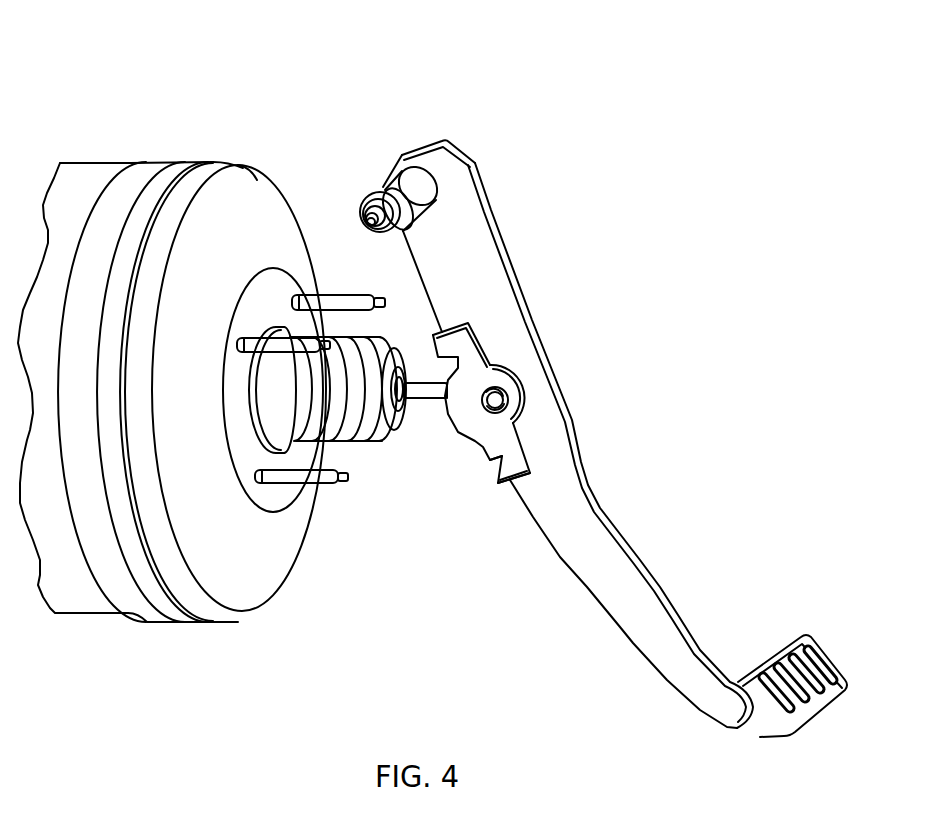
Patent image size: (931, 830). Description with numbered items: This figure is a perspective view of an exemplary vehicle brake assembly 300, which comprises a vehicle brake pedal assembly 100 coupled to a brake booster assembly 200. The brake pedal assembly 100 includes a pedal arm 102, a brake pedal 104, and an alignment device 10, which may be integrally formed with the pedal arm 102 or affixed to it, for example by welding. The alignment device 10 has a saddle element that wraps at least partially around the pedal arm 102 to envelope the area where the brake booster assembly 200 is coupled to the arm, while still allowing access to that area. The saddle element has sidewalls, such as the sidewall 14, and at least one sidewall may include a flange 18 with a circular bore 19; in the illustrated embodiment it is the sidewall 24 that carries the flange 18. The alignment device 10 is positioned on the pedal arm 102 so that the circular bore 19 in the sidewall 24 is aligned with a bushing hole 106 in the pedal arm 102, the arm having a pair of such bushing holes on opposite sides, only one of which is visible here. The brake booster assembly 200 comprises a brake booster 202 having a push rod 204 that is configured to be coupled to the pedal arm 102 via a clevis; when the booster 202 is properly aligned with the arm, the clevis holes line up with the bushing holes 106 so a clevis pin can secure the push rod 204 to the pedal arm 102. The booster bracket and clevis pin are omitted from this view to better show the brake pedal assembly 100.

The vehicle brake assembly 300 is at (385, 96).
The brake booster assembly 200 is at (141, 133).
The brake booster 202 is at (245, 180).
The push rod 204 is at (418, 372).
The vehicle brake pedal assembly 100 is at (527, 190).
The pedal arm 102 is at (505, 281).
The brake pedal 104 is at (792, 650).
The bushing hole 106 is at (506, 397).
The flange 18 is at (517, 407).
The alignment device 10 is at (464, 446).
The sidewall 24 is at (456, 424).
The circular bore 19 is at (488, 410).
The sidewall 14 is at (508, 474).